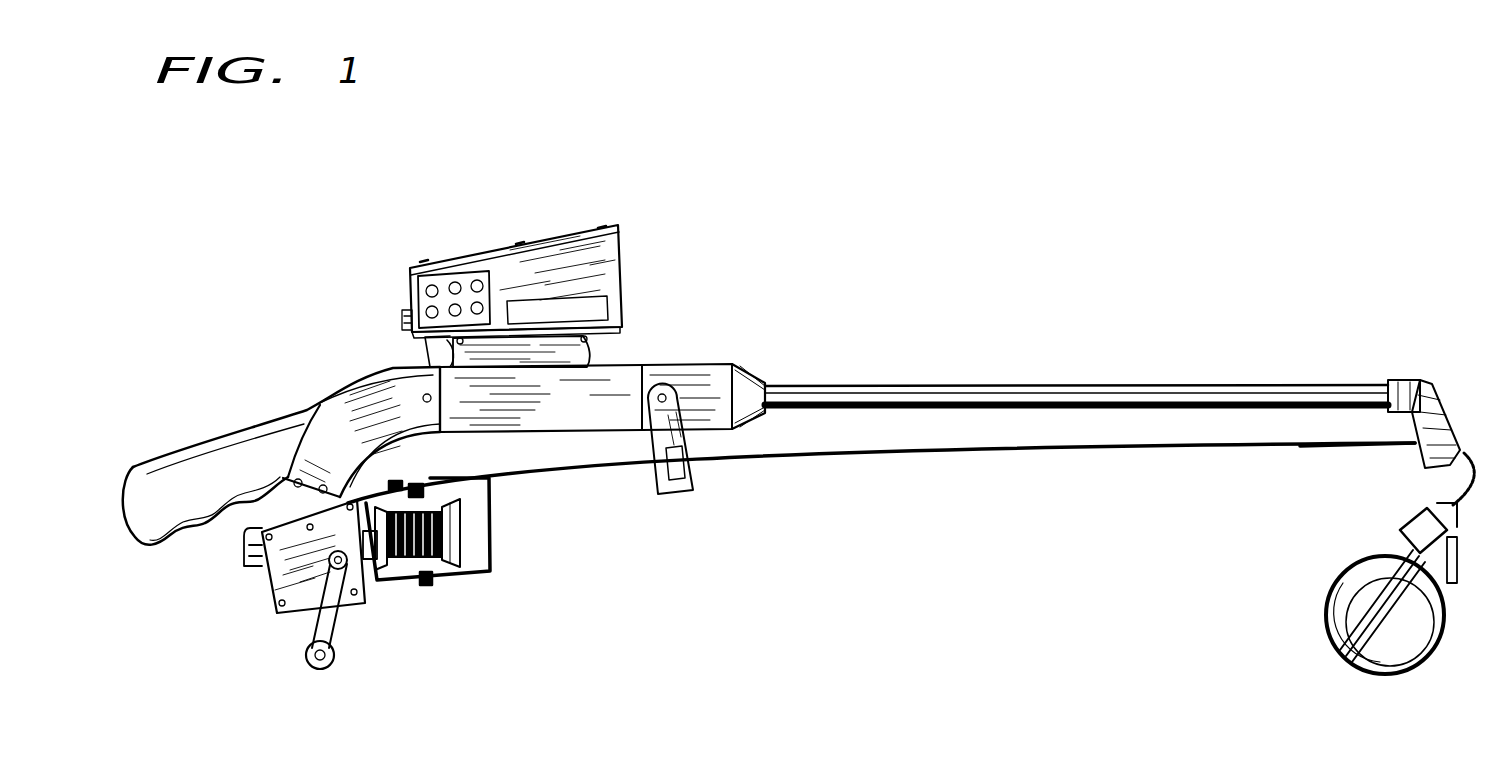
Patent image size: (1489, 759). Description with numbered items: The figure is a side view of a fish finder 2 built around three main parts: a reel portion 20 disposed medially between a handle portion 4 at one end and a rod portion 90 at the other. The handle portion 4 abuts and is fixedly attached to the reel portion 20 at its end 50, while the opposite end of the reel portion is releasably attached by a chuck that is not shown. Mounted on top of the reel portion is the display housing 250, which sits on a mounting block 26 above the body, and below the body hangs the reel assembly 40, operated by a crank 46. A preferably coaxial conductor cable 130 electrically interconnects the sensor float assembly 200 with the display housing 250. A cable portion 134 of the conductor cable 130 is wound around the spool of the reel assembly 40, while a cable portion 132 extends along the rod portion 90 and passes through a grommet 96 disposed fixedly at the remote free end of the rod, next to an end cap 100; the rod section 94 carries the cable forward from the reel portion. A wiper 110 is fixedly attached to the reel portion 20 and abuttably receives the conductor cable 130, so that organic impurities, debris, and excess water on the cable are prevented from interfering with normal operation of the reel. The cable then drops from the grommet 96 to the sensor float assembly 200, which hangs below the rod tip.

The fish finder 2 is at (990, 302).
The handle portion 4 is at (218, 447).
The reel portion 20 is at (543, 422).
The mounting block 26 is at (587, 352).
The reel assembly 40 is at (263, 586).
The crank handle 46 is at (310, 636).
The end of reel portion 50 is at (433, 433).
The rod portion 90 is at (1068, 387).
The pole section 94 is at (855, 387).
The grommet 96 is at (1418, 380).
The end cap 100 is at (1385, 383).
The wiper 110 is at (682, 490).
The coaxial conductor cable 130 is at (1002, 457).
The cable portion 132 is at (1240, 452).
The cable portion 134 is at (430, 580).
The sensor float assembly 200 is at (1325, 622).
The display housing 250 is at (543, 265).